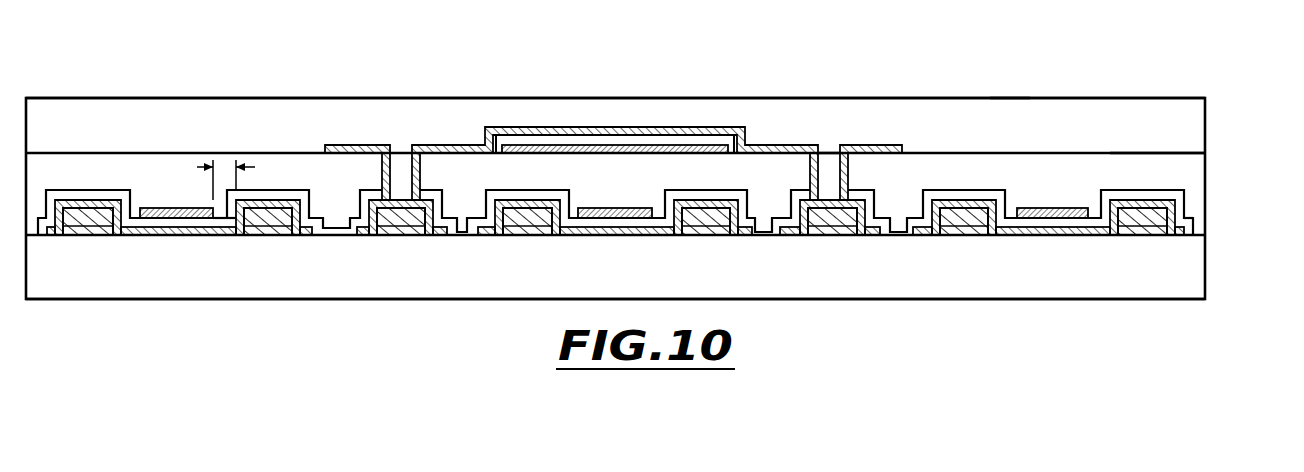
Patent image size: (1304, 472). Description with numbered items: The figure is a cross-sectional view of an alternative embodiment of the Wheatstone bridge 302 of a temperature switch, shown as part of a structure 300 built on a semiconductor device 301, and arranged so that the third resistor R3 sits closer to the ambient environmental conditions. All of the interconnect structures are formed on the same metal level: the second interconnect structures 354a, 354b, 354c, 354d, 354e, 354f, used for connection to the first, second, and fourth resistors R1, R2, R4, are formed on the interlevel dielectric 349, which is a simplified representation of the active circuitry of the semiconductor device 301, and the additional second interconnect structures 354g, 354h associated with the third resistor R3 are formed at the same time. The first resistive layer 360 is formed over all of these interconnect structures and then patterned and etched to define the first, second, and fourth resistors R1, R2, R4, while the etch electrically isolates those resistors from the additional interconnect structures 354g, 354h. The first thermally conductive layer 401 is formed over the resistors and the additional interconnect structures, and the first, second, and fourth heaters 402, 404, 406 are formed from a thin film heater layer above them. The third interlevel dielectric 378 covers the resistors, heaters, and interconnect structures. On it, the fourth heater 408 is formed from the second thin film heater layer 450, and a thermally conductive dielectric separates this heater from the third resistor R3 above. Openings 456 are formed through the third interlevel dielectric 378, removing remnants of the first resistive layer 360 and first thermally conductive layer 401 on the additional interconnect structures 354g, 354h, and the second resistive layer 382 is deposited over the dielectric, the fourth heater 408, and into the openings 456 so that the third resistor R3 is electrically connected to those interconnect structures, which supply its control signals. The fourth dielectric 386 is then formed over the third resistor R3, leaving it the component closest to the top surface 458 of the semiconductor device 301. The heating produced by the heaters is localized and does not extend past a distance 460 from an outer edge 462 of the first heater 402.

The integrated circuit device 300 is at (1164, 86).
The semiconductor device 301 is at (1214, 299).
The Wheatstone bridge 302 is at (299, 96).
The interlevel dielectric 349 is at (1192, 267).
The second interconnect structure 354a is at (92, 220).
The second interconnect structure 354b is at (255, 220).
The second interconnect structure 354c is at (528, 218).
The second interconnect structure 354d is at (707, 218).
The second interconnect structure 354e is at (965, 218).
The second interconnect structure 354f is at (1147, 220).
The additional second interconnect structure 354g is at (400, 218).
The additional second interconnect structure 354h is at (830, 218).
The first resistive layer 360 is at (307, 232).
The third interlevel dielectric 378 is at (1192, 204).
The second resistive layer 382 is at (902, 145).
The fourth dielectric 386 is at (1192, 130).
The first thermally conductive layer 401 is at (322, 217).
The first heater 402 is at (188, 207).
The second heater 404 is at (633, 207).
The fourth heater 406 is at (1072, 207).
The fourth heater 408 is at (660, 150).
The second thin film heater layer 450 is at (400, 147).
The openings 456 is at (830, 147).
The top surface 458 is at (1010, 99).
The distance 460 is at (222, 166).
The outer edge 462 is at (216, 213).
The first resistor R1 is at (180, 232).
The second resistor R2 is at (628, 232).
The third resistor R3 is at (593, 125).
The fourth resistor R4 is at (1070, 232).